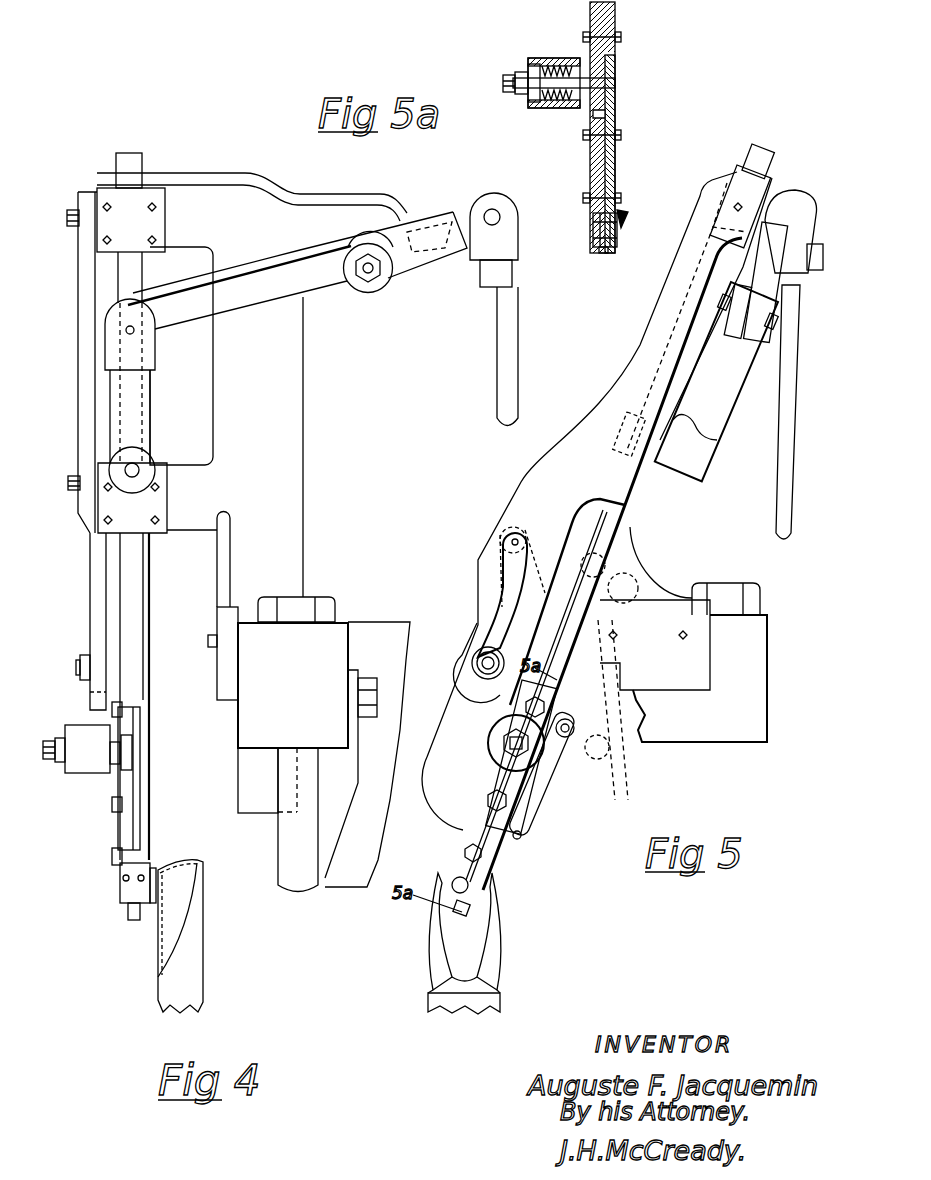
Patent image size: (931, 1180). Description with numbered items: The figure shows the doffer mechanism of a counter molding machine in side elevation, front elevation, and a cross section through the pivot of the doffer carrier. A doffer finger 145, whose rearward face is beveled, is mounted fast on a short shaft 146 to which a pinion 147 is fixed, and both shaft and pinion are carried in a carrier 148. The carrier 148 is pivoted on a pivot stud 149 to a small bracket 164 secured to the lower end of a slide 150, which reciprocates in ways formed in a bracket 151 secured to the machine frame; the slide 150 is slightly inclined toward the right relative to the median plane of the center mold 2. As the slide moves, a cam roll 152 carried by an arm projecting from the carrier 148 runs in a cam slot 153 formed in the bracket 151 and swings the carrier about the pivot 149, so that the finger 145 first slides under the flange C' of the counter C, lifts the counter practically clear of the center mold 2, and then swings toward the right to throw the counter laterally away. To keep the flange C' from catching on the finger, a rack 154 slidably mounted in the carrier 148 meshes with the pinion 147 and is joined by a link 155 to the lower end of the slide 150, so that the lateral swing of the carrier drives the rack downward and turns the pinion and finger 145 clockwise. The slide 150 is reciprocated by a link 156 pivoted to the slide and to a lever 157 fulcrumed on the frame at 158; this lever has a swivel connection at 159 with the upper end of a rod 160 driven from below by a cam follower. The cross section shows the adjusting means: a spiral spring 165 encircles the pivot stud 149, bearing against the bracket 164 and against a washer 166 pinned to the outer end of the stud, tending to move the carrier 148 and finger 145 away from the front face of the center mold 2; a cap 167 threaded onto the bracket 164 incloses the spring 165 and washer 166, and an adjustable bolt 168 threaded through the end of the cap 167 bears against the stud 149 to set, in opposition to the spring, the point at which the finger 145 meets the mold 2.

In FIG. 4, the center mold 2 is at (197, 972).
In FIG. 5, the center mold 2 is at (445, 984).
In FIG. 4, the doffer finger 145 is at (155, 870).
In FIG. 5A, the doffer finger 145 is at (623, 218).
In FIG. 5, the doffer finger 145 is at (467, 873).
In FIG. 5A, the short shaft 146 is at (593, 231).
In FIG. 5, the short shaft 146 is at (455, 883).
In FIG. 5A, the pinion 147 is at (603, 253).
In FIG. 4, the carrier 148 is at (122, 778).
In FIG. 5A, the carrier 148 is at (597, 178).
In FIG. 5, the carrier 148 is at (443, 800).
In FIG. 5A, the pivot stud 149 is at (616, 83).
In FIG. 4, the slide 150 is at (135, 615).
In FIG. 5A, the slide 150 is at (603, 24).
In FIG. 5, the slide 150 is at (620, 537).
In FIG. 4, the bracket 151 is at (92, 430).
In FIG. 5, the bracket 151 is at (642, 344).
In FIG. 4, the cam roll 152 is at (83, 653).
In FIG. 5, the cam roll 152 is at (483, 655).
In FIG. 5, the cam slot 153 is at (497, 620).
In FIG. 4, the rack 154 is at (128, 917).
In FIG. 5, the rack 154 is at (465, 908).
In FIG. 4, the link 155 is at (133, 748).
In FIG. 5, the link 155 is at (545, 776).
In FIG. 4, the link 156 is at (133, 407).
In FIG. 5, the link 156 is at (707, 418).
In FIG. 4, the lever 157 is at (253, 304).
In FIG. 5, the lever 157 is at (762, 278).
In FIG. 4, the fulcrum 158 is at (370, 281).
In FIG. 4, the swivel connection 159 is at (440, 263).
In FIG. 4, the rod 160 is at (502, 388).
In FIG. 5, the rod 160 is at (782, 514).
In FIG. 4, the small bracket 164 is at (122, 758).
In FIG. 5A, the small bracket 164 is at (610, 55).
In FIG. 5, the small bracket 164 is at (515, 716).
In FIG. 5A, the spiral spring 165 is at (560, 78).
In FIG. 5A, the washer 166 is at (532, 58).
In FIG. 4, the cap 167 is at (77, 768).
In FIG. 5A, the cap 167 is at (552, 112).
In FIG. 5, the cap 167 is at (500, 756).
In FIG. 4, the adjustable bolt 168 is at (52, 736).
In FIG. 5A, the adjustable bolt 168 is at (507, 88).
In FIG. 5, the adjustable bolt 168 is at (507, 758).
In FIG. 4, the counter C is at (204, 920).
In FIG. 5, the counter C is at (509, 931).
In FIG. 4, the flange C' is at (128, 930).
In FIG. 5, the flange C' is at (424, 931).